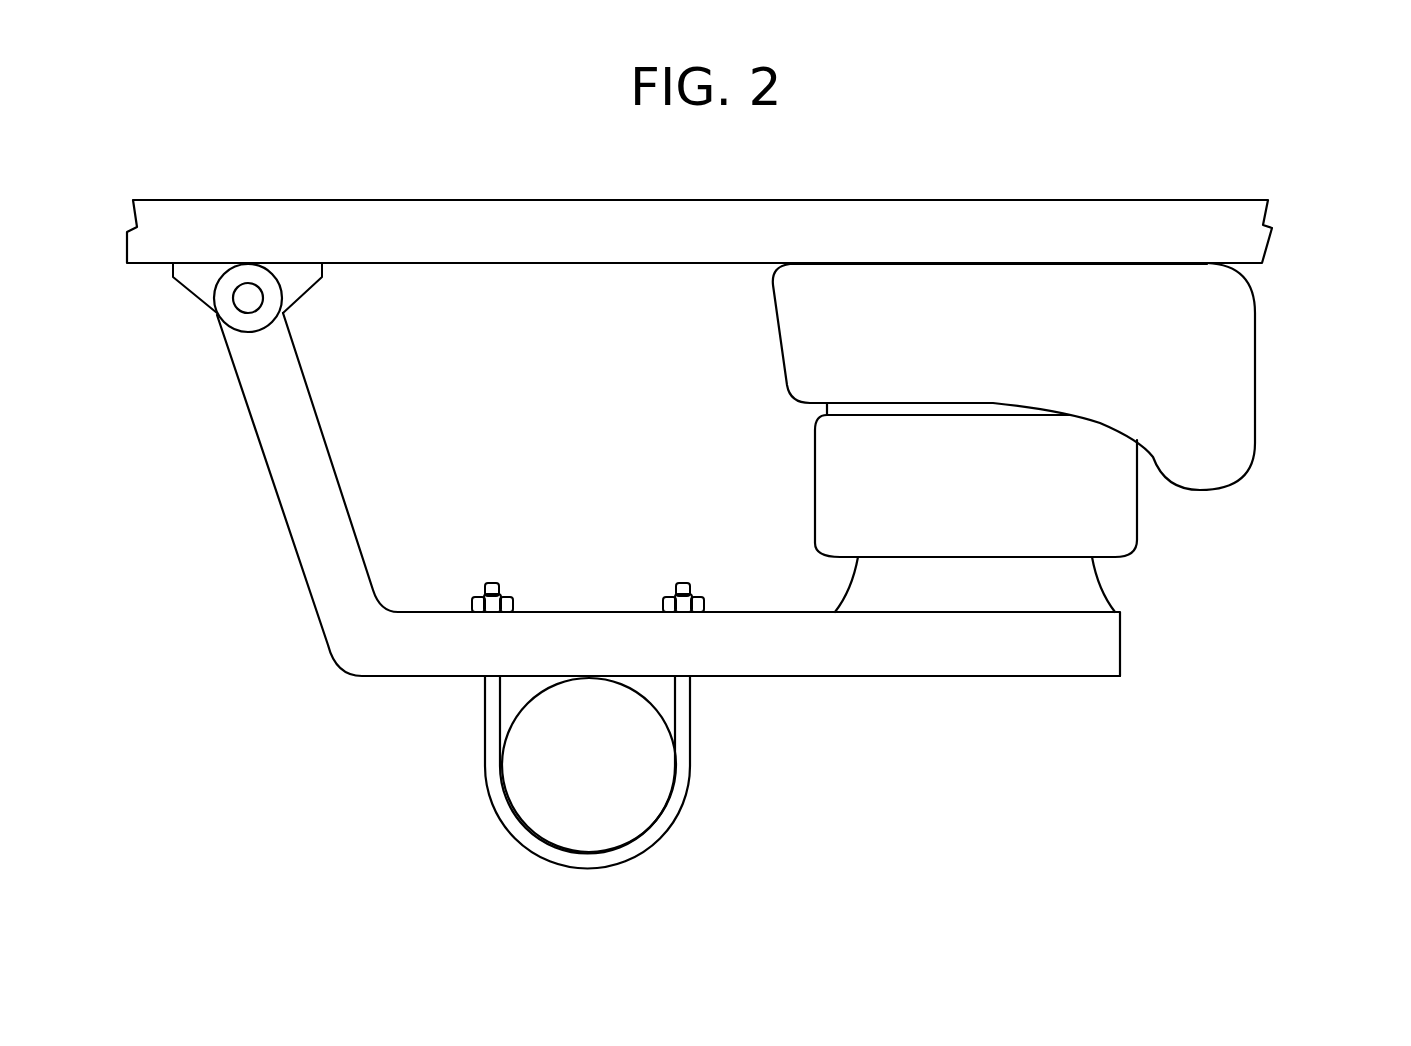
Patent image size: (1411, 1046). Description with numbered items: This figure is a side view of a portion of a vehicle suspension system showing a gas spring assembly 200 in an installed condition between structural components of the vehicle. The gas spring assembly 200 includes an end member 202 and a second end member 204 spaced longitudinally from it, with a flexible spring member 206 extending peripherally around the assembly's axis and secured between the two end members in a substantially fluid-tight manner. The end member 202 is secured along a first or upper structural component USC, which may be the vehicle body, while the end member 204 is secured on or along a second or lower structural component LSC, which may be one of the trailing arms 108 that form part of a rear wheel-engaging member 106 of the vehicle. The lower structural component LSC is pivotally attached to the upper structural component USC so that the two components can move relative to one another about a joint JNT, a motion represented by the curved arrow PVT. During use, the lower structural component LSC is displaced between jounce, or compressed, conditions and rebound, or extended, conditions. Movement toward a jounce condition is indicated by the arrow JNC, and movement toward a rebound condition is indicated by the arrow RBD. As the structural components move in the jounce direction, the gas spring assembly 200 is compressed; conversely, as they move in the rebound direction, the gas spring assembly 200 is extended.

The gas spring assembly 200 is at (1284, 369).
The end member 202 is at (775, 340).
The end member 204 is at (831, 582).
The flexible spring member 206 is at (811, 472).
The rear wheel-engaging member 106 is at (516, 786).
The trailing arm 108 is at (409, 658).
The upper structural component USC is at (468, 225).
The lower structural component LSC is at (898, 657).
The joint JNT is at (252, 266).
The arrow PVT is at (328, 358).
The arrow JNC is at (1273, 715).
The arrow RBD is at (1271, 741).